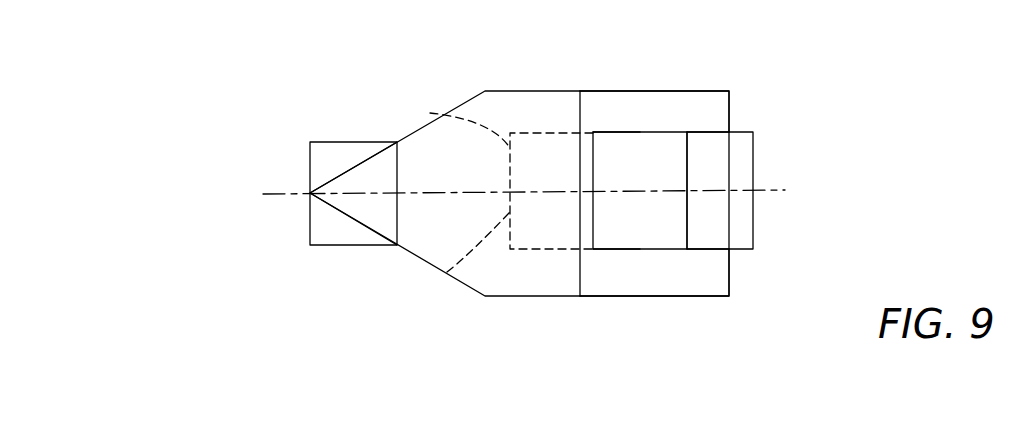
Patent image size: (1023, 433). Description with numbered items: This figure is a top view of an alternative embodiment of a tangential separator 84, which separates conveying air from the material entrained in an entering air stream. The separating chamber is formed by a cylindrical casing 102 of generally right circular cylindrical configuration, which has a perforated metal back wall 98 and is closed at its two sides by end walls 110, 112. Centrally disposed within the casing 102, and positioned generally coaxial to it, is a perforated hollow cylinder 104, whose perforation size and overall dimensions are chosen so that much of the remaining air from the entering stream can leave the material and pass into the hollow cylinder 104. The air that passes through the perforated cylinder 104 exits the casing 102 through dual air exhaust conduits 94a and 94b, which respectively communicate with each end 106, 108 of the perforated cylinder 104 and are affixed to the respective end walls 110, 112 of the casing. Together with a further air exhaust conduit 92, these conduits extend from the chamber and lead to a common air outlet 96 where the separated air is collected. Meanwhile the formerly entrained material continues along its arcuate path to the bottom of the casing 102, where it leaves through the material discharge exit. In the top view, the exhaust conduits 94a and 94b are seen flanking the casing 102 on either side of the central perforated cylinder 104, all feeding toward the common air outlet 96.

The tangential separator 84 is at (166, 138).
The air exhaust conduit 92 is at (447, 272).
The air exhaust conduit 94a is at (692, 275).
The air exhaust conduit 94b is at (687, 108).
The common air outlet 96 is at (309, 207).
The perforated metal back wall 98 is at (430, 113).
The cylindrical casing 102 is at (735, 162).
The perforated hollow cylinder 104 is at (593, 158).
The end of perforated cylinder 106 is at (622, 250).
The end of perforated cylinder 108 is at (608, 132).
The end wall of casing 110 is at (707, 249).
The end wall of casing 112 is at (708, 132).